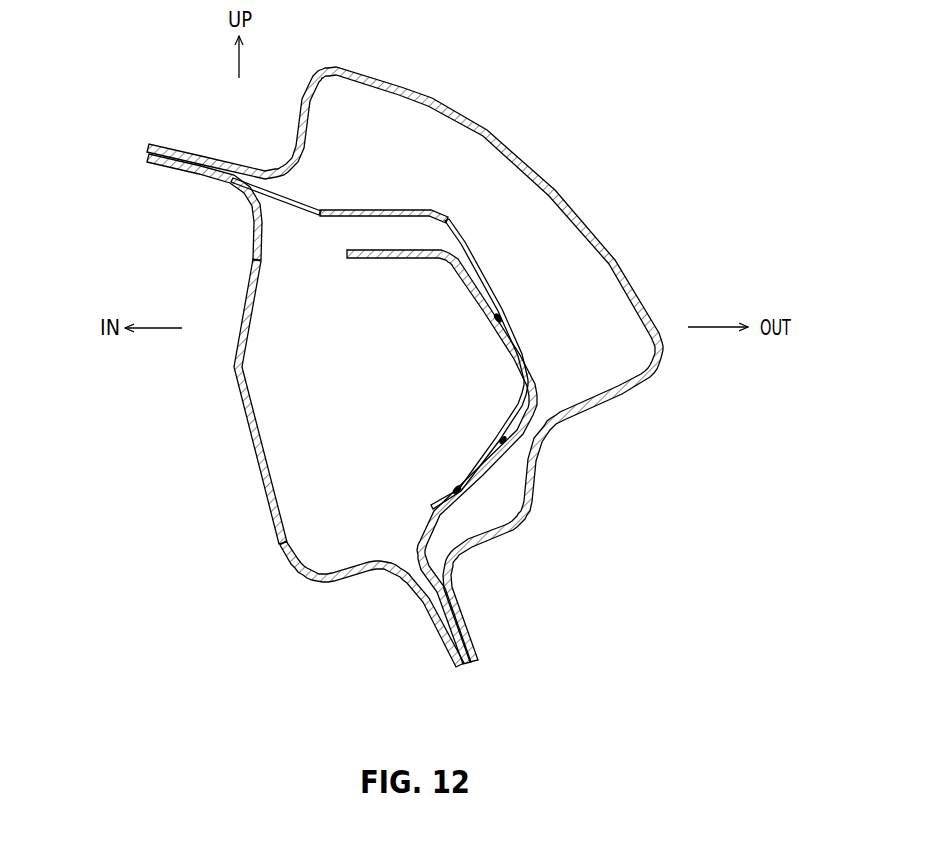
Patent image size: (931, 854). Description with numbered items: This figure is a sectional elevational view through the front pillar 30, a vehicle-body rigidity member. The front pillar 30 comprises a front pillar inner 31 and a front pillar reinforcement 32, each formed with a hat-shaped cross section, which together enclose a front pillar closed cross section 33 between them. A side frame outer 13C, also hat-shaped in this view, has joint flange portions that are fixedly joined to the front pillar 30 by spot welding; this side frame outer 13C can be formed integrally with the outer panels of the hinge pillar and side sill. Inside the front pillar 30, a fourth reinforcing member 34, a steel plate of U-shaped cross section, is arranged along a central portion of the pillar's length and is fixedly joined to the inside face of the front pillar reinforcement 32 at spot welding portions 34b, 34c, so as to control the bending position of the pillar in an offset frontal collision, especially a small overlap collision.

The side frame outer 13C is at (588, 222).
The front pillar 30 is at (305, 410).
The front pillar inner 31 is at (265, 497).
The front pillar reinforcement 32 is at (447, 222).
The front pillar closed cross section 33 is at (363, 413).
The fourth reinforcing member 34 is at (503, 355).
The spot welding portion 34b is at (500, 314).
The spot welding portion 34c is at (459, 493).